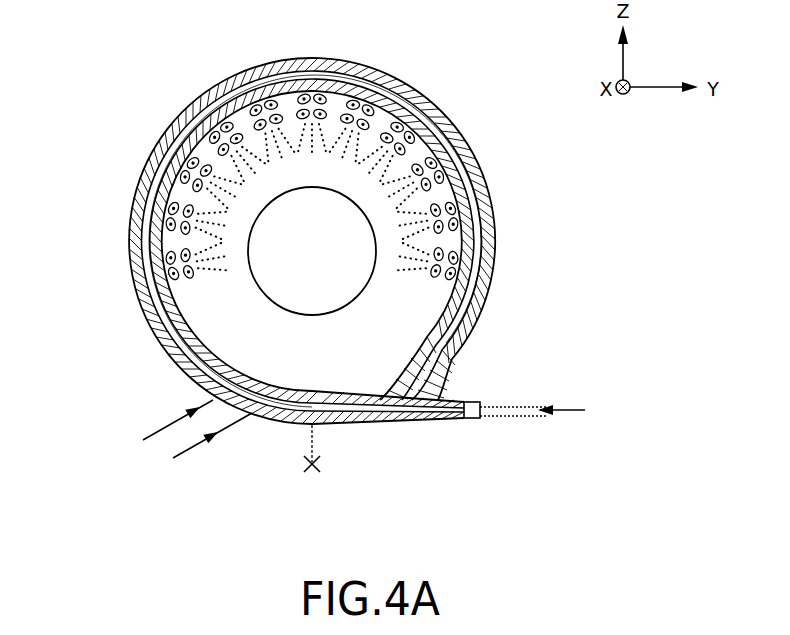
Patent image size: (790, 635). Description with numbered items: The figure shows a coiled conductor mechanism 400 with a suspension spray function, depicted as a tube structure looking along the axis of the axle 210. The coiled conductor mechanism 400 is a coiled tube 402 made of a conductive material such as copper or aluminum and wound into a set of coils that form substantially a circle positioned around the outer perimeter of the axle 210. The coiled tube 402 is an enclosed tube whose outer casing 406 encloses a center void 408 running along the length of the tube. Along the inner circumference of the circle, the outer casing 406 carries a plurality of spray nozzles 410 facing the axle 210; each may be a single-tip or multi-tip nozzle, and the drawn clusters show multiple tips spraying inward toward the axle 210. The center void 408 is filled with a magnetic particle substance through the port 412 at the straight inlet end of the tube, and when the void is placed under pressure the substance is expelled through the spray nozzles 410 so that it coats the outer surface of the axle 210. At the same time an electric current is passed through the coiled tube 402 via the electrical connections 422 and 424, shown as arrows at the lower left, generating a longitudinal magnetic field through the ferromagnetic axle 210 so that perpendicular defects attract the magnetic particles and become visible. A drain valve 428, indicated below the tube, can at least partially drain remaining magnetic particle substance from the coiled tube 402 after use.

The coiled conductor mechanism 400 is at (170, 74).
The coiled tube 402 is at (488, 186).
The outer casing 406 is at (490, 237).
The center void 408 is at (483, 281).
The spray nozzles 410 is at (407, 143).
The axle 210 is at (330, 312).
The port 412 is at (573, 410).
The electrical connection 424 is at (158, 428).
The electrical connection 422 is at (188, 452).
The drain valve 428 is at (318, 468).